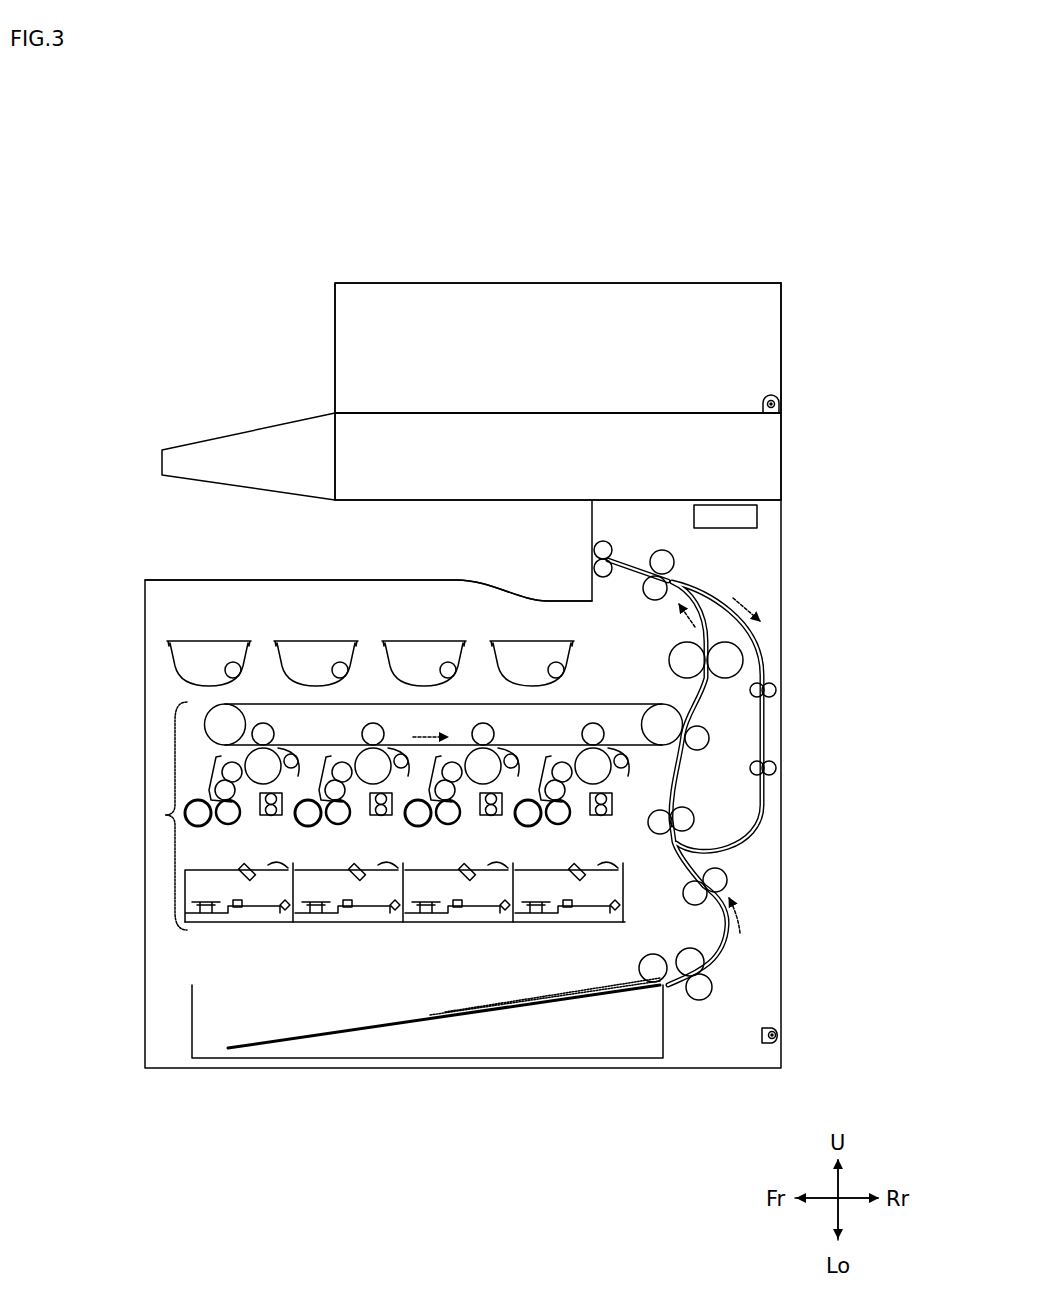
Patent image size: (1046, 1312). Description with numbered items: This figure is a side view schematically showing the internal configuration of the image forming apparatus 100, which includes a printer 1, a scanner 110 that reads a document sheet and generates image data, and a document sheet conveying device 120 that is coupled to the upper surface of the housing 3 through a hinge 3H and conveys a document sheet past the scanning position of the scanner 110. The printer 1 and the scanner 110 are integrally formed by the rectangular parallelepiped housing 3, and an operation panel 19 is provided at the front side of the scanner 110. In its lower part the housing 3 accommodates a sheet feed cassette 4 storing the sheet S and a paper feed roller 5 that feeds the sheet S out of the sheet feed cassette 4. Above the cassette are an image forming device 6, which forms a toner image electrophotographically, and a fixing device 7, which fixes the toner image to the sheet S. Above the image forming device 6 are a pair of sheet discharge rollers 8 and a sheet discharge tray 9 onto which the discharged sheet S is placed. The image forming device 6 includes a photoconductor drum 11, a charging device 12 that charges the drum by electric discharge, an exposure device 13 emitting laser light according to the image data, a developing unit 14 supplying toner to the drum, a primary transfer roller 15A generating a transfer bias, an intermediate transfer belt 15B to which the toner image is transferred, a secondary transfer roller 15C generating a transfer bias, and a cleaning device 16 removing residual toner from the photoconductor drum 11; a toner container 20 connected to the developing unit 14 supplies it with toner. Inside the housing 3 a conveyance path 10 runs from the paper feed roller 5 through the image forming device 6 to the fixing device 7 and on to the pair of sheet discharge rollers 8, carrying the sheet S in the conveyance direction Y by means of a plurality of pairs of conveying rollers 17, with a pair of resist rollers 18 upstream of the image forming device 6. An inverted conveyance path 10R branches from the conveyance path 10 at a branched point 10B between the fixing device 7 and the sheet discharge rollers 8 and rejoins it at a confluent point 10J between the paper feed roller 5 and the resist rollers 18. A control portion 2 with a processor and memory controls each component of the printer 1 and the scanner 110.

The image forming apparatus 100 is at (801, 236).
The printer 1 is at (799, 560).
The housing 3 is at (782, 522).
The document sheet conveying device 120 is at (799, 342).
The scanner 110 is at (799, 452).
The hinge 3H is at (782, 405).
The operation panel 19 is at (232, 428).
The sheet discharge tray 9 is at (328, 580).
The control portion 2 is at (733, 530).
The pair of sheet discharge rollers 8 is at (616, 548).
The pair of conveying rollers 17 is at (678, 565).
The conveyance path 10 is at (718, 938).
The inverted conveyance path 10R is at (772, 740).
The branched point 10B is at (668, 603).
The confluent point 10J is at (672, 843).
The sheet conveying direction Y is at (740, 915).
The fixing device 7 is at (729, 684).
The pair of resist rollers 18 is at (693, 817).
The primary transfer roller 15A is at (583, 733).
The intermediate transfer belt 15B is at (603, 700).
The secondary transfer roller 15C is at (695, 750).
The toner container 20 is at (577, 645).
The image forming device 6 is at (167, 816).
The photoconductor drum 11 is at (611, 782).
The cleaning device 16 is at (628, 760).
The charging device 12 is at (607, 815).
The developing unit 14 is at (547, 823).
The exposure device 13 is at (562, 857).
The sheet feed cassette 4 is at (667, 1033).
The sheet S is at (415, 1012).
The paper feed roller 5 is at (638, 965).